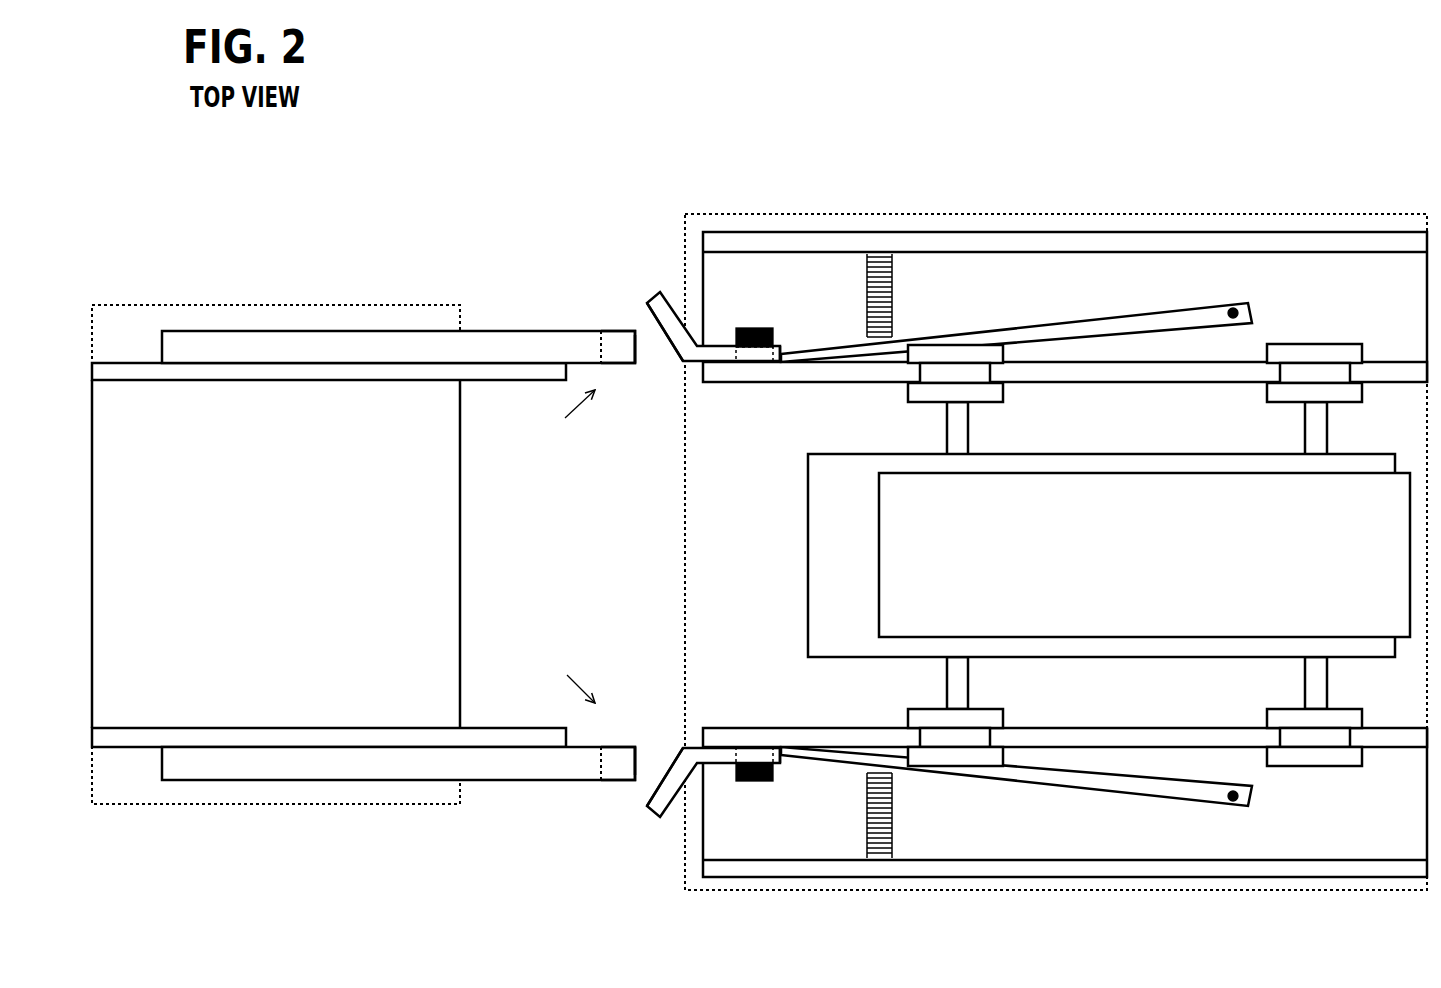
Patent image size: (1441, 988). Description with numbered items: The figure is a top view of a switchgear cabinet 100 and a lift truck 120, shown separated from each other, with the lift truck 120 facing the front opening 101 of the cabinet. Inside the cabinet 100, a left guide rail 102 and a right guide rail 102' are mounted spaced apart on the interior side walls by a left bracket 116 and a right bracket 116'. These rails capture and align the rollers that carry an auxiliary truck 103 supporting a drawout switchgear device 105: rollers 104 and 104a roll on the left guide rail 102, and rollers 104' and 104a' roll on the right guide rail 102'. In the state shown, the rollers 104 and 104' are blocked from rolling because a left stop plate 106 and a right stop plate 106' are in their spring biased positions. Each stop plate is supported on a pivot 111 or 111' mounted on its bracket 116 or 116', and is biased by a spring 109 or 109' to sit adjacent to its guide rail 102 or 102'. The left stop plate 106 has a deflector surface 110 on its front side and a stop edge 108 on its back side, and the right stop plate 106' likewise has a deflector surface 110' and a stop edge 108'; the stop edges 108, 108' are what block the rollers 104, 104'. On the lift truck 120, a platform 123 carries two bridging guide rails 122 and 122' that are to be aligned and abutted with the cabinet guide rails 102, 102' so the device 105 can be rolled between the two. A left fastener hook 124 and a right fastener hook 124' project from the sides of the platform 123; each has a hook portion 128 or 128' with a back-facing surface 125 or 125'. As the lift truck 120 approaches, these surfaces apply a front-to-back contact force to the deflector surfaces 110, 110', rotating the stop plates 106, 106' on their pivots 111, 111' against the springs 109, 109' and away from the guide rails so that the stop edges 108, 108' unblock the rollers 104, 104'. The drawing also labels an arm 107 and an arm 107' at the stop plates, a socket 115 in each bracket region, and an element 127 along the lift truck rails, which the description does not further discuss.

The switchgear cabinet 100 is at (1010, 890).
The front opening 101 is at (673, 585).
The left guide rail 102 is at (1065, 401).
The right guide rail 102' is at (1065, 712).
The auxiliary truck 103 is at (807, 603).
The left roller 104 is at (981, 400).
The left roller 104a is at (1341, 399).
The right roller 104' is at (983, 711).
The right roller 104a' is at (1341, 711).
The drawout switchgear device 105 is at (1160, 582).
The left stop plate 106 is at (677, 265).
The right stop plate 106' is at (664, 844).
The arm 107 is at (1016, 322).
The arm 107' is at (1016, 793).
The stop edge 108 is at (815, 310).
The stop edge 108' is at (815, 796).
The spring 109 is at (907, 295).
The spring 109' is at (907, 815).
The deflector surface 110 is at (590, 286).
The deflector surface 110' is at (588, 824).
The pivot 111 is at (1274, 293).
The pivot 111' is at (1284, 818).
The socket 115 is at (733, 902).
The left bracket 116 is at (1056, 541).
The right bracket 116' is at (1065, 894).
The lift truck 120 is at (242, 805).
The bridging guide rail 122 is at (329, 407).
The bridging guide rail 122' is at (329, 698).
The platform 123 is at (172, 691).
The left fastener hook 124 is at (502, 297).
The right fastener hook 124' is at (517, 800).
The back-facing surface 125 is at (637, 371).
The back-facing surface 125' is at (641, 746).
The bar 127 is at (268, 331).
The hook portion 128 is at (564, 413).
The hook portion 128' is at (565, 681).